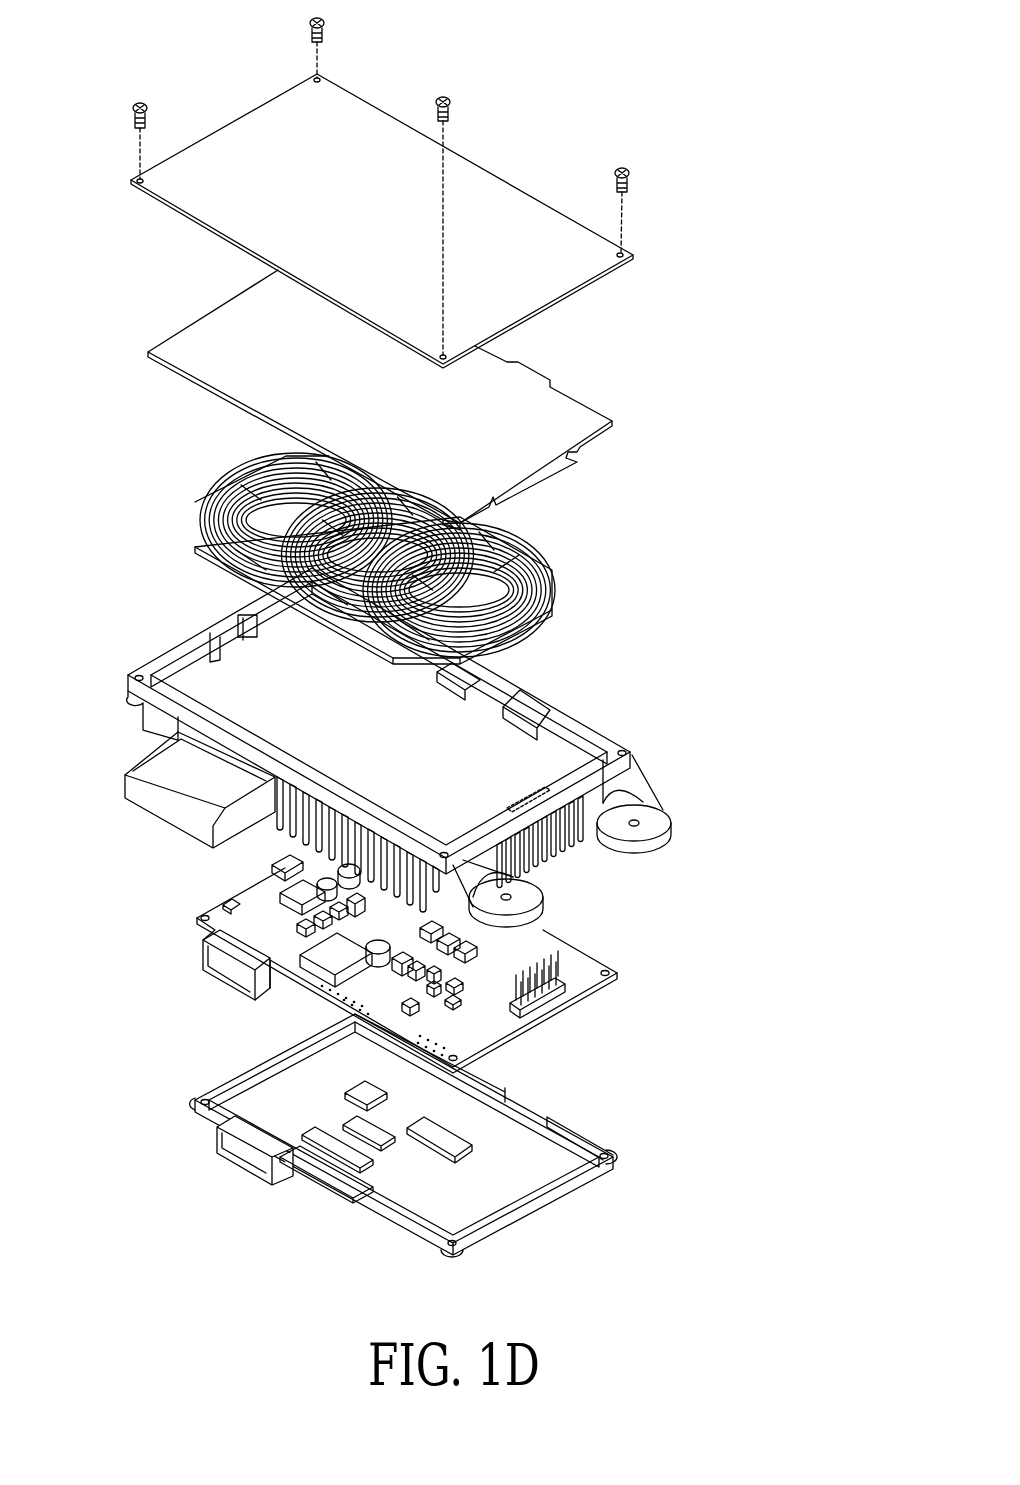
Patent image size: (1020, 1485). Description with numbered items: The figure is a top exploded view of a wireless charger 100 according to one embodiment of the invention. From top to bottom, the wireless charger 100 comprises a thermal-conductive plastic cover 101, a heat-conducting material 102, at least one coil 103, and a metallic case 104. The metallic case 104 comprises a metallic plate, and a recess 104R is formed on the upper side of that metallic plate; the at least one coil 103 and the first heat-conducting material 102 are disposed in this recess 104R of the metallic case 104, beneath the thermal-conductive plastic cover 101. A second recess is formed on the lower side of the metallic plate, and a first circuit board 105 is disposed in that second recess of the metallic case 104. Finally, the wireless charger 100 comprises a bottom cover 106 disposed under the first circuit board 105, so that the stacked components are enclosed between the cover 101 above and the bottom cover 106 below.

The wireless charger 100 is at (712, 79).
The thermal-conductive plastic cover 101 is at (650, 233).
The heat-conducting material 102 is at (654, 423).
The coil 103 is at (571, 584).
The metallic case 104 is at (435, 713).
The recess 104R is at (263, 683).
The first circuit board 105 is at (654, 975).
The bottom cover 106 is at (654, 1170).